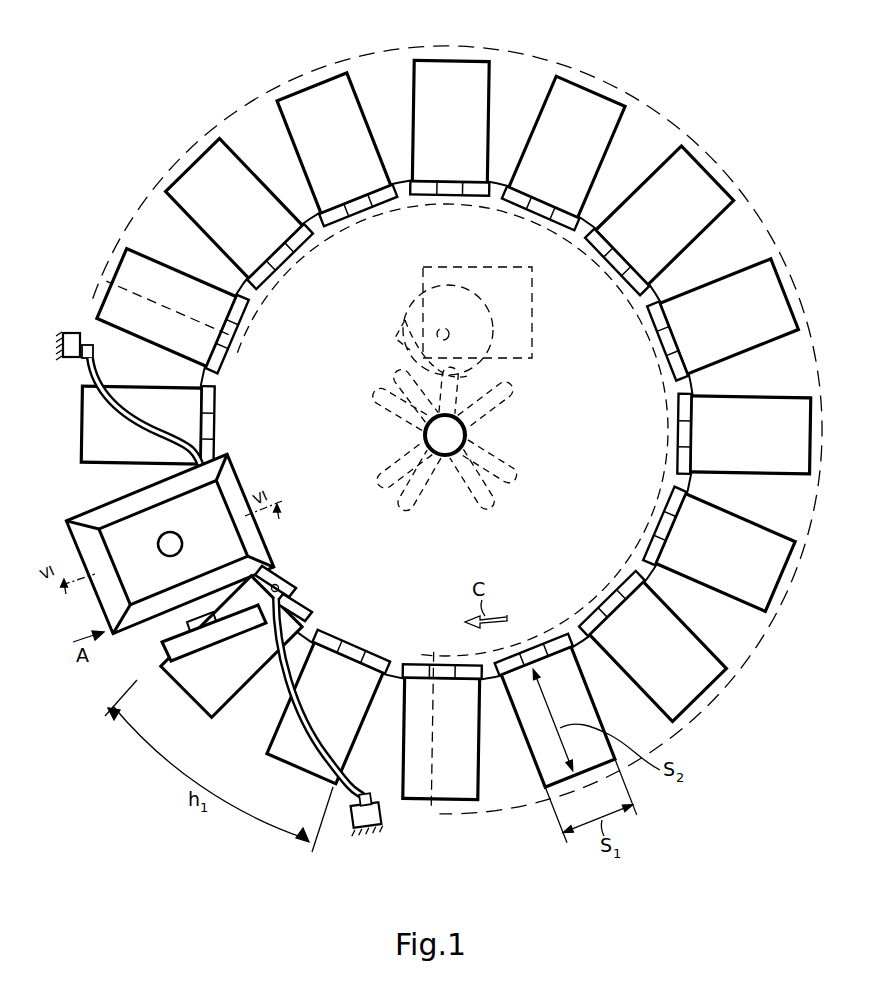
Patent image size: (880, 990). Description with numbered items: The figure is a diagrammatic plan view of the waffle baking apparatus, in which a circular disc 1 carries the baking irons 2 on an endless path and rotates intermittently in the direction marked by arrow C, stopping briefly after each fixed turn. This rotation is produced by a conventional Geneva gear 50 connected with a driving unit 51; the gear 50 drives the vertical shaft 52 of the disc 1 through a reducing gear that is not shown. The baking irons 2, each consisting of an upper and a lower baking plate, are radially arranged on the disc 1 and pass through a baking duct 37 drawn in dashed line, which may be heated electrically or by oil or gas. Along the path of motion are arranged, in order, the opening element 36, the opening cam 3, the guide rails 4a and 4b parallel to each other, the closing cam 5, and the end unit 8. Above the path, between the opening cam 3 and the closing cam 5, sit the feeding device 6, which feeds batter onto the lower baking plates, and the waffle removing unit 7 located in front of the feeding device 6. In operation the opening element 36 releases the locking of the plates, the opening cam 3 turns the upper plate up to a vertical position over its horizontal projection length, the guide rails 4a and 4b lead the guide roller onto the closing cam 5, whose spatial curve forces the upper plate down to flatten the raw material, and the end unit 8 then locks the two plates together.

The circular disc 1 is at (408, 247).
The baking irons 2 is at (597, 128).
The opening cam 3 is at (300, 727).
The guide rail 4a is at (284, 598).
The guide rail 4b is at (286, 583).
The closing cam 5 is at (172, 439).
The feeding device 6 is at (268, 540).
The waffle removing unit 7 is at (177, 672).
The end unit 8 is at (72, 333).
The opening element 36 is at (375, 829).
The baking duct 37 is at (535, 52).
The Geneva gear 50 is at (515, 386).
The driving unit 51 is at (528, 269).
The vertical shaft 52 is at (458, 438).